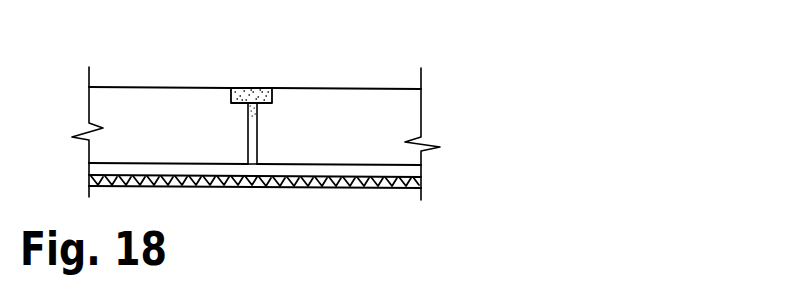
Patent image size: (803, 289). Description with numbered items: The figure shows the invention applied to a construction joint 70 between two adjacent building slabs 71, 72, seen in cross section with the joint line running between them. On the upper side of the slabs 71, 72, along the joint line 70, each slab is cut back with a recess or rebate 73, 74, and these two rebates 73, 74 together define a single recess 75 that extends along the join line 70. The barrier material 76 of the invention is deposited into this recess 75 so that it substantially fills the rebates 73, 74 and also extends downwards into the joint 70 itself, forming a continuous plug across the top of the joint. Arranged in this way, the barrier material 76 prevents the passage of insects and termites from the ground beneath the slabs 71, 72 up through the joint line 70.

The construction joint 70 is at (255, 140).
The building slab 71 is at (213, 152).
The building slab 72 is at (335, 153).
The rebate 73 is at (237, 113).
The rebate 74 is at (288, 108).
The recess 75 is at (264, 72).
The barrier material 76 is at (237, 87).